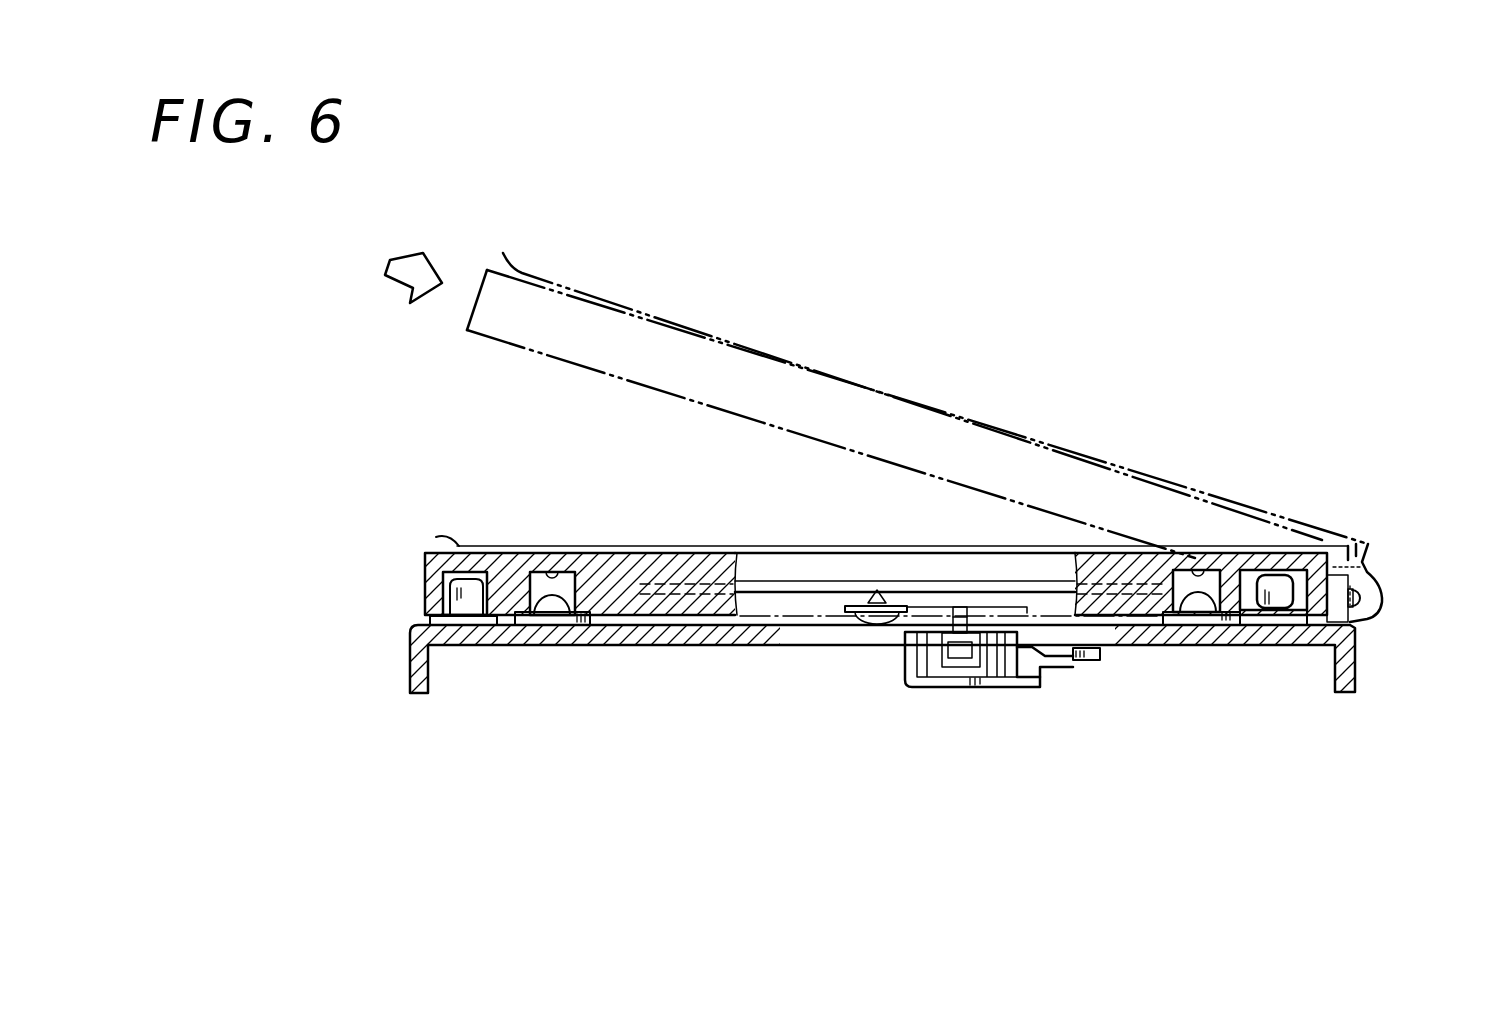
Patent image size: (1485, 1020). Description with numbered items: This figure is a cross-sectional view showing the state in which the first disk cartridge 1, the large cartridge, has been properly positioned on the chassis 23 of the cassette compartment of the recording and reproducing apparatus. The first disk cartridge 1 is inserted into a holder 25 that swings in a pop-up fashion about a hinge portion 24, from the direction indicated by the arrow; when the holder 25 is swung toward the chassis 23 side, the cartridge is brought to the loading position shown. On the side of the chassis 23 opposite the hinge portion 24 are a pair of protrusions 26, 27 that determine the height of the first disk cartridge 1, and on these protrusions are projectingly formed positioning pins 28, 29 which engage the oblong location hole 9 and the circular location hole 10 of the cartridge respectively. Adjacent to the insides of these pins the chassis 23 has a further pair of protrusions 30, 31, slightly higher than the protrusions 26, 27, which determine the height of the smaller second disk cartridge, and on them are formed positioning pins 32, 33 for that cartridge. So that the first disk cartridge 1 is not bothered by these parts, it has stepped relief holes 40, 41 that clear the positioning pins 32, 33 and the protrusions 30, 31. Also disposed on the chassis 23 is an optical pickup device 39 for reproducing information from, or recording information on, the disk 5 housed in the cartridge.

The first disk cartridge 1 is at (657, 568).
The disk 5 is at (820, 585).
The oblong location hole 9 is at (1294, 562).
The circular location hole 10 is at (477, 572).
The chassis 23 is at (663, 637).
The hinge portion 24 is at (1368, 598).
The holder 25 is at (760, 545).
The protrusion 26 is at (1257, 617).
The protrusion 27 is at (440, 628).
The positioning pin 28 is at (1277, 610).
The positioning pin 29 is at (470, 607).
The protrusion 30 is at (1178, 620).
The protrusion 31 is at (538, 622).
The positioning pin 32 is at (1200, 602).
The positioning pin 33 is at (557, 607).
The optical pickup device 39 is at (873, 617).
The stepped relief hole 40 is at (1200, 567).
The stepped relief hole 41 is at (563, 572).